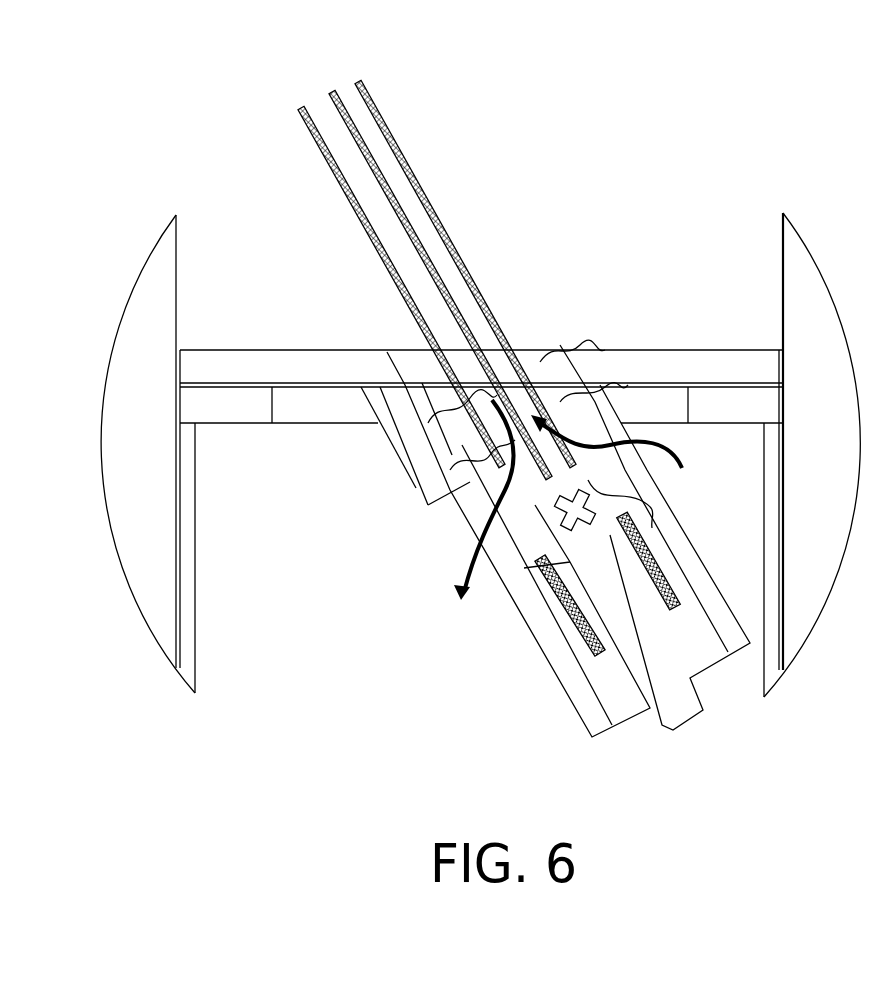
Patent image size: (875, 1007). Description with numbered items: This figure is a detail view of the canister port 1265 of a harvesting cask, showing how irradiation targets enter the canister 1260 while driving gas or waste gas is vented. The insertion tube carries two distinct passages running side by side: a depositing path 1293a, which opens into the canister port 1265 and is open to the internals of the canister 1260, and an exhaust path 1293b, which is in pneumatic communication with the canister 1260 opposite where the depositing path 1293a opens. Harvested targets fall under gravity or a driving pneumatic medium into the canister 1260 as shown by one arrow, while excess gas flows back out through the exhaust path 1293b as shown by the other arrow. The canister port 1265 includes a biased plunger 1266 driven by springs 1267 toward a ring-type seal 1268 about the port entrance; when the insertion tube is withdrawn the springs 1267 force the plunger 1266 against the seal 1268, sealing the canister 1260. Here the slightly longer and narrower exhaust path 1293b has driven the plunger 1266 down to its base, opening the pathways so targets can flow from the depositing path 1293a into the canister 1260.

The canister 1260 is at (195, 693).
The canister port 1265 is at (547, 541).
The biased plunger 1266 is at (530, 585).
The springs 1267 is at (580, 608).
The ring-type seal 1268 is at (487, 424).
The depositing path 1293a is at (357, 188).
The exhaust path 1293b is at (432, 212).